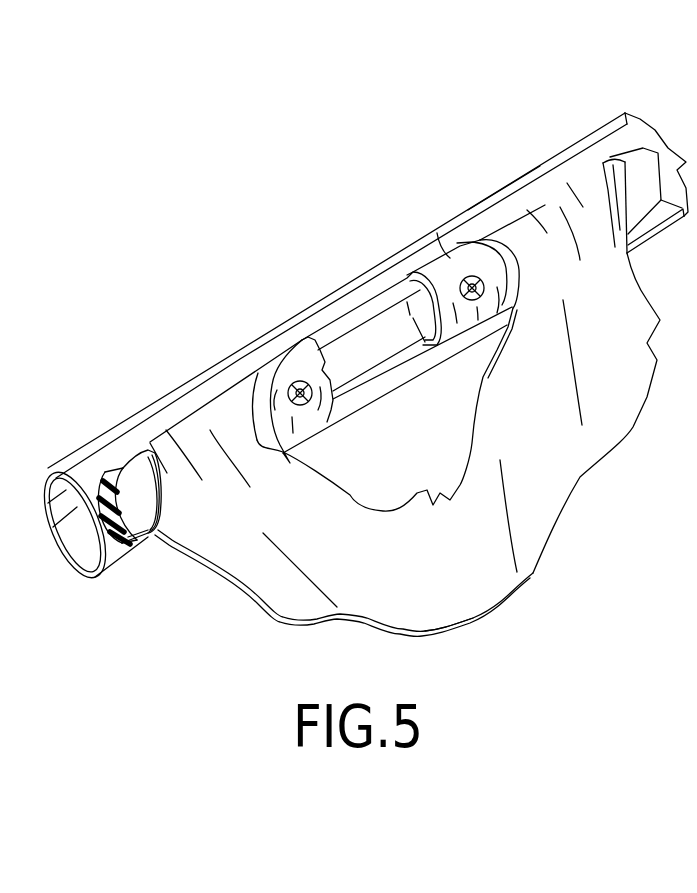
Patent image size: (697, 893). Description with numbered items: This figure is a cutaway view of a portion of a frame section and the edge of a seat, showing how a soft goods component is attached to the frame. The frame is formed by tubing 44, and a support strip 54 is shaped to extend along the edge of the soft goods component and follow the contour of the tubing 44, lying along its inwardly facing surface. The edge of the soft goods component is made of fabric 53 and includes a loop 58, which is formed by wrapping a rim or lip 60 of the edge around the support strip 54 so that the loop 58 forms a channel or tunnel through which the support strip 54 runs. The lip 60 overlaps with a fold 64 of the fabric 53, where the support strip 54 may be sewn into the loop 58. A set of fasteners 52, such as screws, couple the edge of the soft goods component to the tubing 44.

The tubing 44 is at (153, 407).
The fasteners 52 is at (300, 382).
The fabric 53 is at (435, 598).
The support strip 54 is at (373, 302).
The loop 58 is at (418, 268).
The lip 60 is at (453, 300).
The fold 64 is at (232, 432).